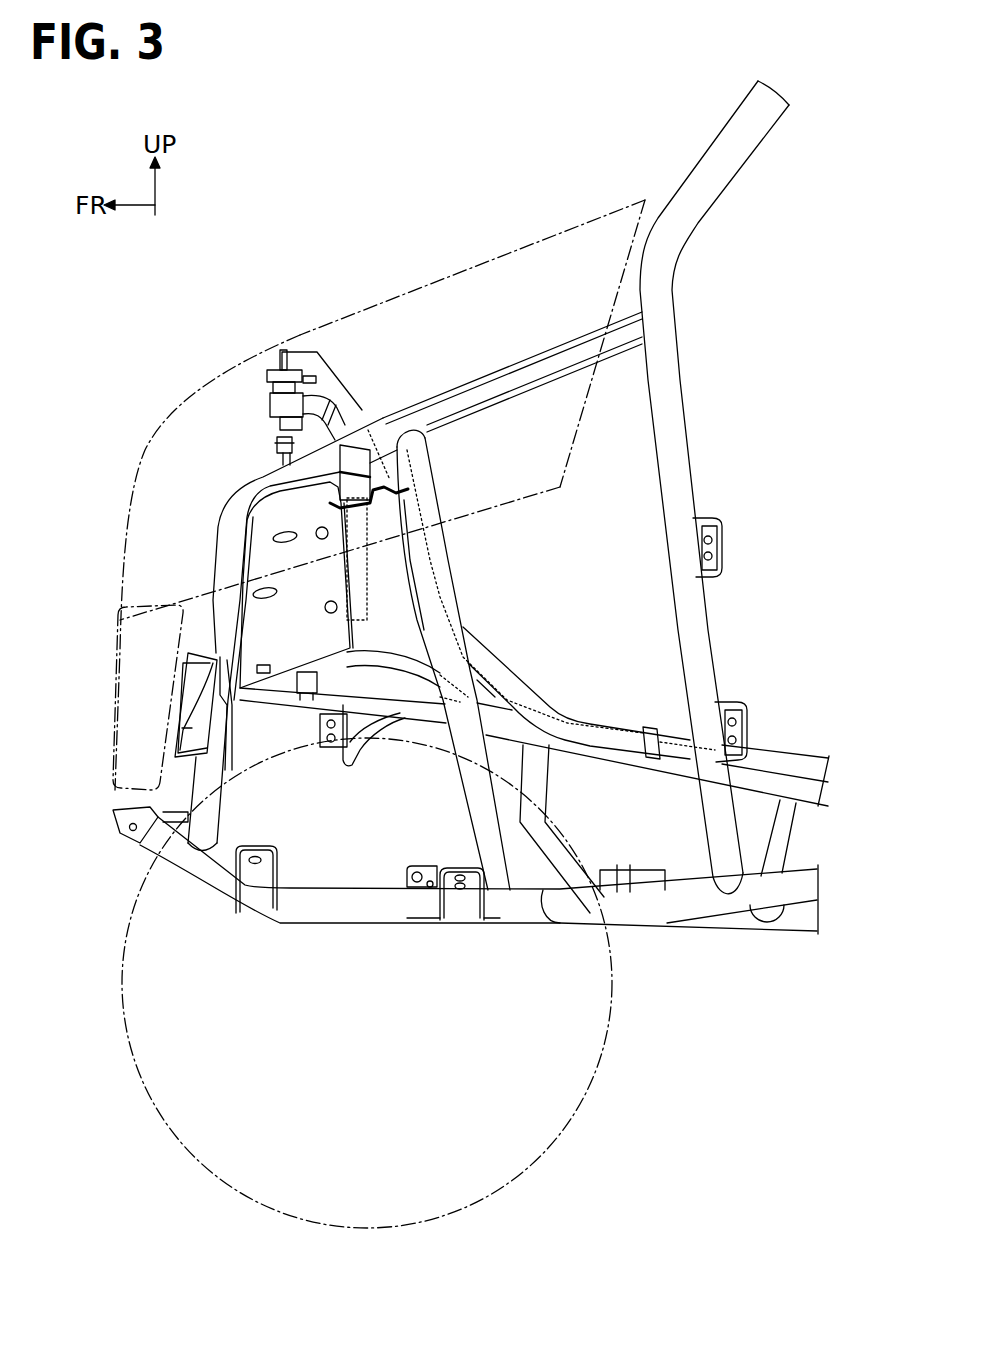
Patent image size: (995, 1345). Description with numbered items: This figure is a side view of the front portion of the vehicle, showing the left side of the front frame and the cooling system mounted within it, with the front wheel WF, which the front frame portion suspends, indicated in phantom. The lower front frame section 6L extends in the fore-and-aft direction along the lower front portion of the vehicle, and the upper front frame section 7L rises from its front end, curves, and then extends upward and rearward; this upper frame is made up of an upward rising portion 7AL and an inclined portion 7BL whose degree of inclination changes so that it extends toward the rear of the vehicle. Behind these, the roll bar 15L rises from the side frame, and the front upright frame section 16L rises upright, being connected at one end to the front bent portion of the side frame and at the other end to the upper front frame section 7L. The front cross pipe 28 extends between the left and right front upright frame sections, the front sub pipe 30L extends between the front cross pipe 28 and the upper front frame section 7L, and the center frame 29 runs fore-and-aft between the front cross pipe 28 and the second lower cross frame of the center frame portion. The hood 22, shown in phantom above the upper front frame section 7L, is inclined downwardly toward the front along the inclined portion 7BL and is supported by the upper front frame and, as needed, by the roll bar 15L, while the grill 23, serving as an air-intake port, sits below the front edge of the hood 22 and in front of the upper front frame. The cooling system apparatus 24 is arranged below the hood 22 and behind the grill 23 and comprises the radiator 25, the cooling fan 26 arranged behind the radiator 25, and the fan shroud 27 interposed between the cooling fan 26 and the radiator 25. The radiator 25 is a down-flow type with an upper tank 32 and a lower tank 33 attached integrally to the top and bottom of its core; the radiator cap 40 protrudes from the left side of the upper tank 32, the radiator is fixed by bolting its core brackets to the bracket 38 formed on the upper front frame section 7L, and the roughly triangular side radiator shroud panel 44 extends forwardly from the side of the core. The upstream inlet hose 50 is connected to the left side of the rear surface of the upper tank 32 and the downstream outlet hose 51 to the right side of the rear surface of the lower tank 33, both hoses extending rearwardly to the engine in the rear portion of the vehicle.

The lower front frame section 6L is at (363, 917).
The upper front frame section 7L is at (232, 494).
The upward rising portion 7AL is at (215, 633).
The inclined portion 7BL is at (412, 412).
The roll bar 15L is at (685, 441).
The front upright frame section 16L is at (453, 593).
The hood 22 is at (477, 263).
The grill 23 is at (114, 787).
The cooling system apparatus 24 is at (187, 446).
The radiator 25 is at (268, 406).
The cooling fan 26 is at (368, 568).
The fan shroud 27 is at (378, 522).
The front cross pipe 28 is at (517, 705).
The center frame 29 is at (667, 767).
The front sub pipe 30L is at (320, 706).
The upper tank 32 is at (285, 400).
The lower tank 33 is at (307, 692).
The bracket 38 is at (276, 444).
The radiator cap 40 is at (273, 370).
The side radiator shroud panel 44 is at (272, 623).
The upstream inlet hose 50 is at (363, 407).
The downstream outlet hose 51 is at (410, 680).
The front wheel WF is at (576, 1107).